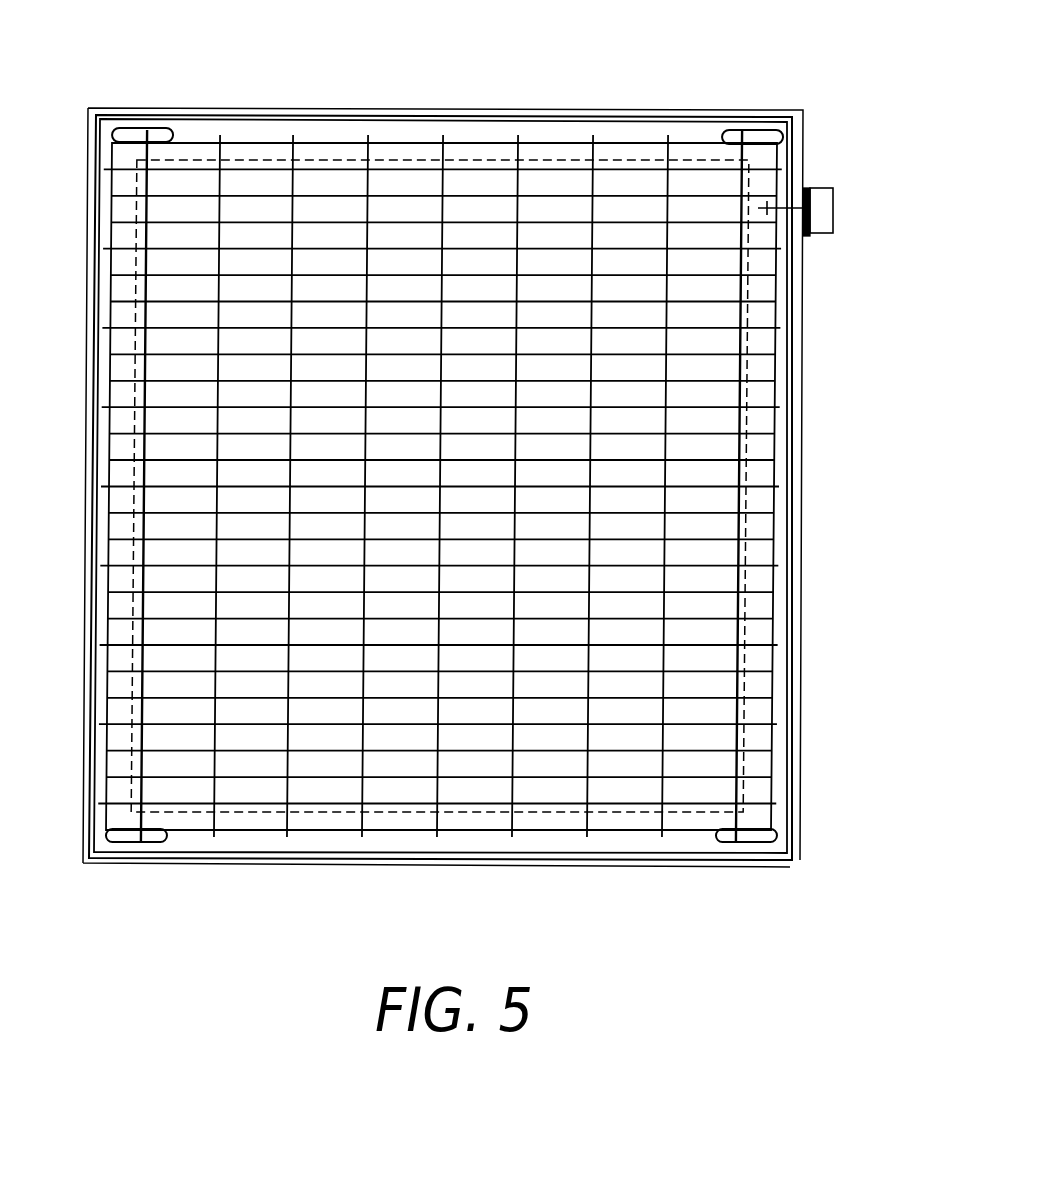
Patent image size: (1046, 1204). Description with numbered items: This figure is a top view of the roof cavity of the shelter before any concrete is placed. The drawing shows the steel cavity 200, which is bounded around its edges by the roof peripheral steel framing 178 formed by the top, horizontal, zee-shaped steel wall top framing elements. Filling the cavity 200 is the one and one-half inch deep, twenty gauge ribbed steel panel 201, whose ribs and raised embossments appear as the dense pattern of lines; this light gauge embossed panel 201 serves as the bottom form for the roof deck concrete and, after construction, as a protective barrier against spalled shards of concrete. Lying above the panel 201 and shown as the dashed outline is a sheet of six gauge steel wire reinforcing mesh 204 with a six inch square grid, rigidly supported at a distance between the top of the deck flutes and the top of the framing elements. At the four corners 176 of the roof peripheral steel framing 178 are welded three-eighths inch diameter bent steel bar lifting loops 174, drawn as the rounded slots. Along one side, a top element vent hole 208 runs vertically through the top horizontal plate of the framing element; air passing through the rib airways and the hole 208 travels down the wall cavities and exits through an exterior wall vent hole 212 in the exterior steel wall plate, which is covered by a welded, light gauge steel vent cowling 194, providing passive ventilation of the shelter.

The bent steel bar lifting loops 174 is at (732, 131).
The corners 176 is at (102, 106).
The roof peripheral steel framing 178 is at (430, 107).
The steel vent cowlings 194 is at (836, 213).
The cavity 200 is at (410, 186).
The ribbed steel panel 201 is at (252, 185).
The steel wire reinforcing mesh 204 is at (320, 166).
The top element vent holes 208 is at (762, 216).
The exterior wall vent holes 212 is at (815, 200).